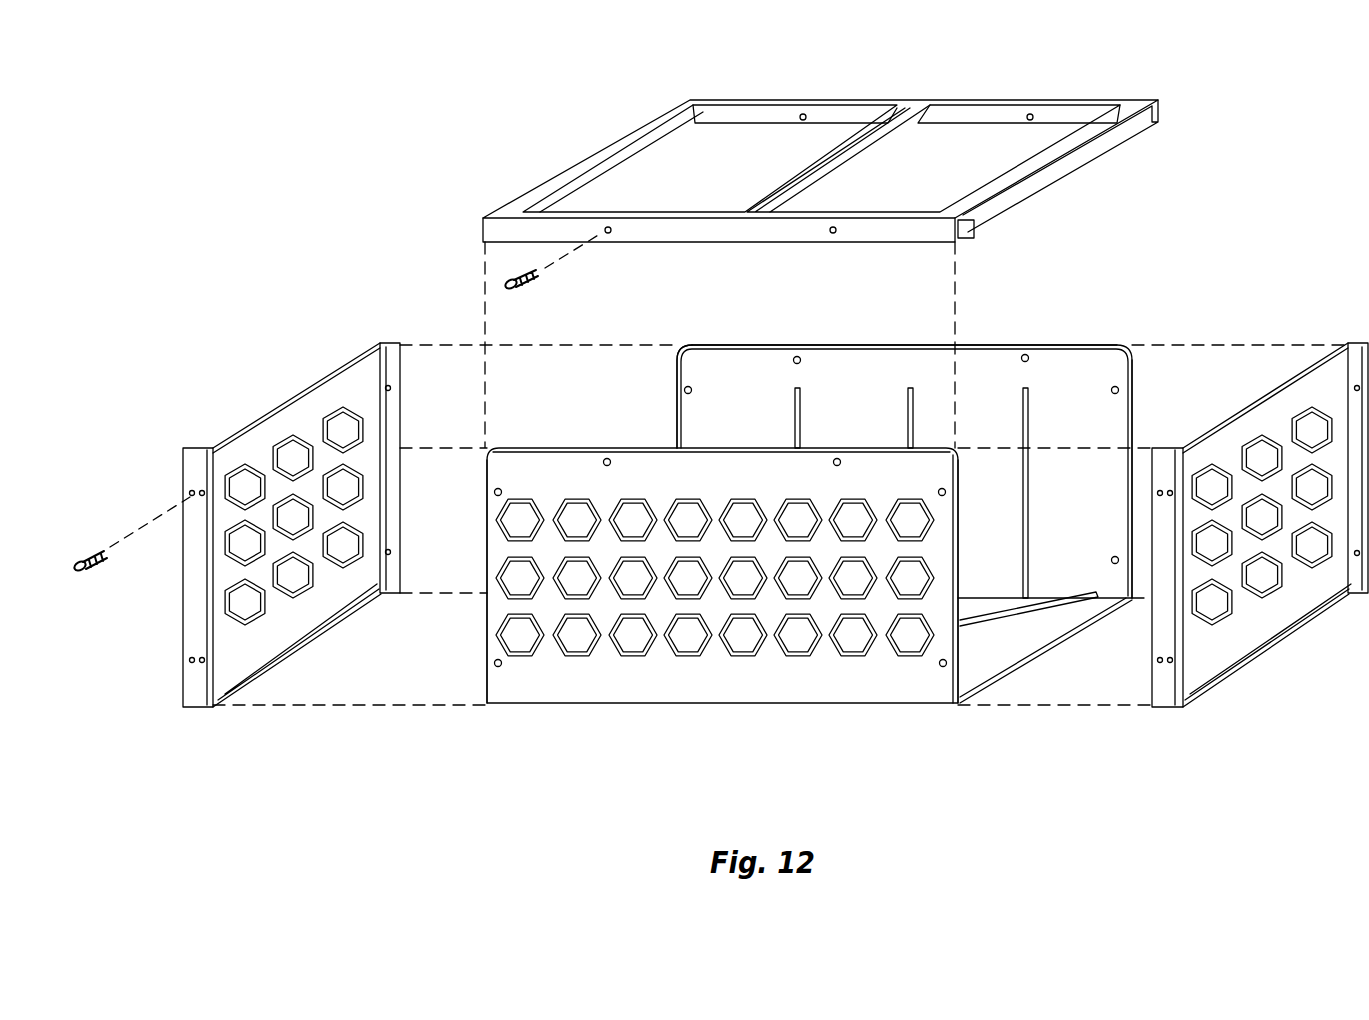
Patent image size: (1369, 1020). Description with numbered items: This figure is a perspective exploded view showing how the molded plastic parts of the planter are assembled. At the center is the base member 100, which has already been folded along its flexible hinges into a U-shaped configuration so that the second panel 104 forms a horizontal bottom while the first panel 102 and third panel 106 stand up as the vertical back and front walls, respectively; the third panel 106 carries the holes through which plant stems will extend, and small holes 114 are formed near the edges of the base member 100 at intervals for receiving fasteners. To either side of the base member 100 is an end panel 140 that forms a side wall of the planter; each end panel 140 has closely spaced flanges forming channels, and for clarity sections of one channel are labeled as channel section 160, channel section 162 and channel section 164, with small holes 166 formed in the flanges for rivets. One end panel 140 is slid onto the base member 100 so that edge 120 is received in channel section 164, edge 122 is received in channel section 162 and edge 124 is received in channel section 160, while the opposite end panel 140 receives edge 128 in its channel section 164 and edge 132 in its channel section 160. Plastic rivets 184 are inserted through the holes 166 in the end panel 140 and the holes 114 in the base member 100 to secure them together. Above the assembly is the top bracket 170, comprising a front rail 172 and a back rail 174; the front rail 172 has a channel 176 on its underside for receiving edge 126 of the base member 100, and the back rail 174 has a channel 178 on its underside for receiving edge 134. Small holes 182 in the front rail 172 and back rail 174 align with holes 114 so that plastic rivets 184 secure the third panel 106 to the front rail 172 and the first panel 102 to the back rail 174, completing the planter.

The base member 100 is at (558, 746).
The first panel 102 is at (1060, 368).
The second panel 104 is at (978, 657).
The third panel 106 is at (797, 683).
The small holes 114 is at (686, 389).
The edge 120 is at (1135, 403).
The edge 122 is at (1033, 663).
The edge 124 is at (945, 678).
The edge 126 is at (722, 447).
The edge 128 is at (485, 630).
The edge 132 is at (677, 432).
The edge 134 is at (985, 345).
The end panel 140 is at (176, 737).
The channel section 160 is at (404, 397).
The channel section 162 is at (255, 682).
The channel section 164 is at (208, 607).
The small holes 166 is at (198, 490).
The top bracket 170 is at (496, 125).
The front rail 172 is at (683, 228).
The back rail 174 is at (953, 98).
The channel 176 is at (963, 240).
The channel 178 is at (1153, 126).
The small holes 182 is at (838, 235).
The plastic rivets 184 is at (530, 285).